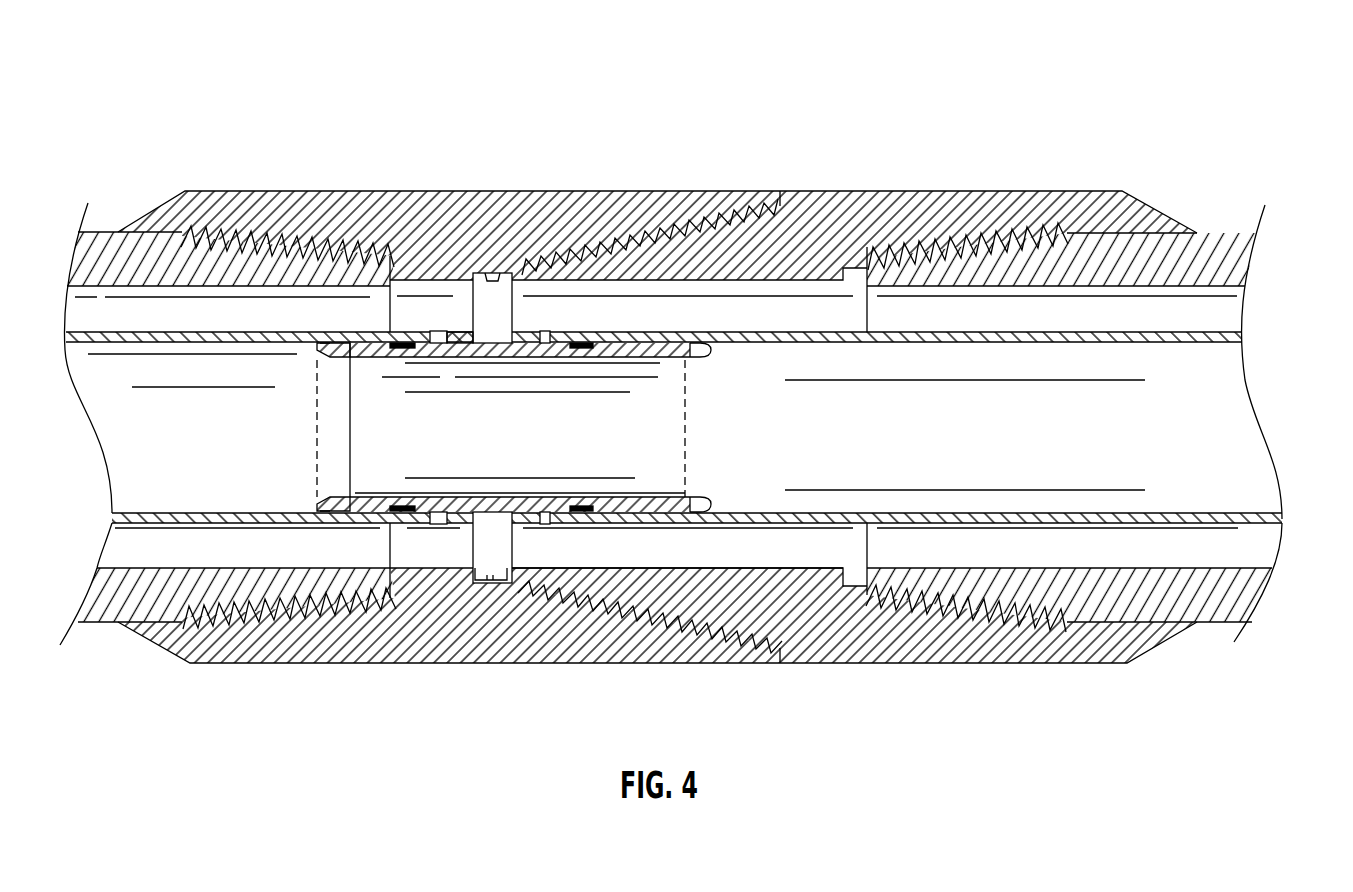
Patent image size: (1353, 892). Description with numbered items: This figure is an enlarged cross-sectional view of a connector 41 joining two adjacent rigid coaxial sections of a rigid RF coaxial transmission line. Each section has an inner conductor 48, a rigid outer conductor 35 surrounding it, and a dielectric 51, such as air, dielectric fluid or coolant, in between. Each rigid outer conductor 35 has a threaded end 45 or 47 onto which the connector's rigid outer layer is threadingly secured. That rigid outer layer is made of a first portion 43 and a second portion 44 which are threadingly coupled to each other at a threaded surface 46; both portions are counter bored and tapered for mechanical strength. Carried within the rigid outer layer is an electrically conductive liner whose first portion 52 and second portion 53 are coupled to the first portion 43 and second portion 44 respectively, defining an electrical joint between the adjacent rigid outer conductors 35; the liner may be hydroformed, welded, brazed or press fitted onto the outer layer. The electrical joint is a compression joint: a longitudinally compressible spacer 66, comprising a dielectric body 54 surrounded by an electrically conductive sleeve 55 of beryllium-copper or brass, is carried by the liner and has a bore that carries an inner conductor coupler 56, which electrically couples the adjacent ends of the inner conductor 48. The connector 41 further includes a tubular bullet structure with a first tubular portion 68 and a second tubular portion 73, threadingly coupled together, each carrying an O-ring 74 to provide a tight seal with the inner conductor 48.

The rigid outer conductor 35 is at (93, 230).
The connector 41 is at (814, 100).
The first portion of rigid outer layer 43 is at (443, 184).
The second portion of rigid outer layer 44 is at (947, 184).
The threaded end 45 is at (1005, 240).
The threaded surface 46 is at (648, 236).
The threaded end 47 is at (315, 240).
The inner conductor 48 is at (1232, 520).
The dielectric 51 is at (1223, 313).
The first portion of electrically conductive liner 52 is at (490, 556).
The second portion of electrically conductive liner 53 is at (603, 570).
The dielectric body 54 is at (492, 578).
The electrically conductive sleeve 55 is at (457, 510).
The inner conductor coupler 56 is at (450, 340).
The longitudinally compressible spacer 66 is at (522, 310).
The first tubular portion 68 is at (700, 490).
The second tubular portion 73 is at (313, 512).
The O-ring 74 is at (337, 512).